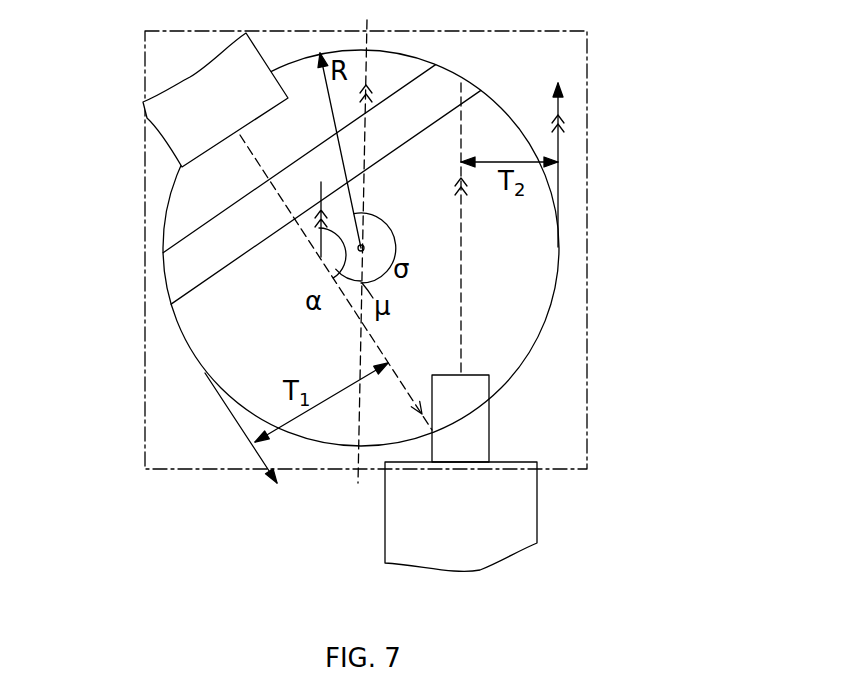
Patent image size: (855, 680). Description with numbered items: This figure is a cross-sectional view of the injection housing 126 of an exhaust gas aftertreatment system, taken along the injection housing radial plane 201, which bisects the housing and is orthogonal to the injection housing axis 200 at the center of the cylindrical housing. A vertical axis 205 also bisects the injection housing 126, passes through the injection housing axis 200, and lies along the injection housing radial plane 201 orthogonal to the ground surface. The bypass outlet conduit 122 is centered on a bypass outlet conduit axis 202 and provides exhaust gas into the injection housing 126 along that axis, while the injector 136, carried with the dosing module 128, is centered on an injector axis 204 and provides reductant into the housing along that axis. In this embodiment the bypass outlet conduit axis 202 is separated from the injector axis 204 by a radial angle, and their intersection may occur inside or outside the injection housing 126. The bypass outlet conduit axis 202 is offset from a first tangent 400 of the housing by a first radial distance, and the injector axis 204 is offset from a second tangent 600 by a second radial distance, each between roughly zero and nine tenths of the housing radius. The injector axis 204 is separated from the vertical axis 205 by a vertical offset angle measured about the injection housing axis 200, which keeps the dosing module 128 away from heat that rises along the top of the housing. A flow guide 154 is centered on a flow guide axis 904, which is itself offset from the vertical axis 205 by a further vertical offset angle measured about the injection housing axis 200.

The bypass outlet conduit 122 is at (147, 118).
The injection housing 126 is at (172, 195).
The dosing module 128 is at (385, 520).
The injector 136 is at (489, 432).
The flow guide 154 is at (275, 236).
The injection housing axis 200 is at (370, 236).
The injection housing radial plane 201 is at (591, 42).
The bypass outlet conduit axis 202 is at (360, 323).
The injector axis 204 is at (463, 120).
The vertical axis 205 is at (372, 66).
The first tangent 400 is at (253, 444).
The second tangent 600 is at (560, 143).
The flow guide axis 904 is at (262, 167).